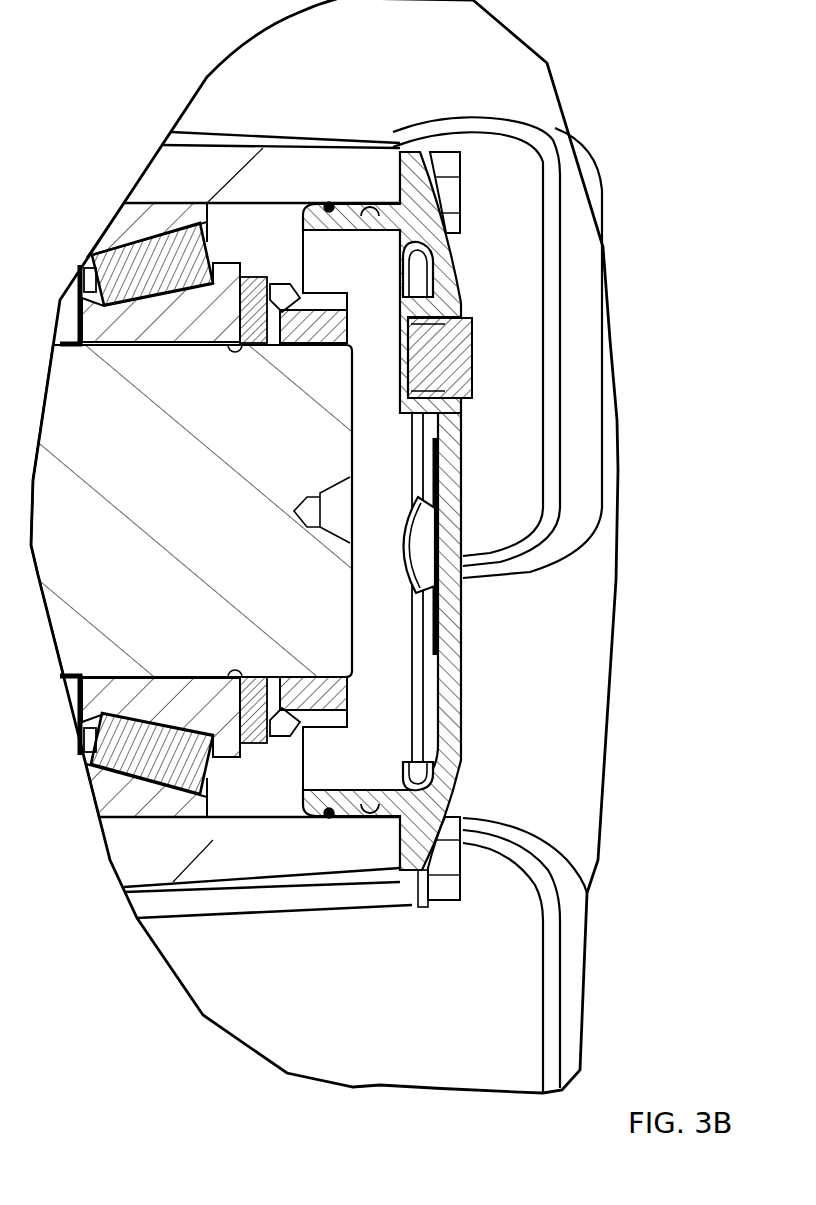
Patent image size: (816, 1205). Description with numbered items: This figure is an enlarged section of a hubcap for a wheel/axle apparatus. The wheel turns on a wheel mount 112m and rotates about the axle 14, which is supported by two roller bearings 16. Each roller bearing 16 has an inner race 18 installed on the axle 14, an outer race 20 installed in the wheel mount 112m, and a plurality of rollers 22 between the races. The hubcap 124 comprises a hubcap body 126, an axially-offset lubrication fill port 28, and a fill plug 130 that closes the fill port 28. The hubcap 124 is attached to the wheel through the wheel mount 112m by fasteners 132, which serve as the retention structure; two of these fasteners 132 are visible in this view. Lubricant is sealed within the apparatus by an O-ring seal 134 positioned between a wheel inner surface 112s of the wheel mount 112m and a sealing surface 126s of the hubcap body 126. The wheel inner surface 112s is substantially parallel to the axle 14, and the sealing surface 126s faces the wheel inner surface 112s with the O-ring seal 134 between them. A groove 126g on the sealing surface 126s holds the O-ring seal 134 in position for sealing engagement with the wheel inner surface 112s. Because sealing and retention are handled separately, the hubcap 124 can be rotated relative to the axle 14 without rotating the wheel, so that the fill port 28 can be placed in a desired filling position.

The axle 14 is at (140, 509).
The roller bearing 16 is at (146, 510).
The outer race 20 is at (200, 228).
The inner race 18 is at (208, 323).
The rollers 22 is at (161, 275).
The lubrication fill port 28 is at (457, 407).
The wheel mount 112m is at (247, 189).
The wheel inner surface 112s is at (348, 203).
The hubcap 124 is at (545, 605).
The hubcap body 126 is at (460, 657).
The groove 126g is at (333, 232).
The sealing surface 126s is at (377, 203).
The fill plug 130 is at (452, 347).
The fasteners 132 is at (443, 192).
The O-ring seal 134 is at (330, 203).